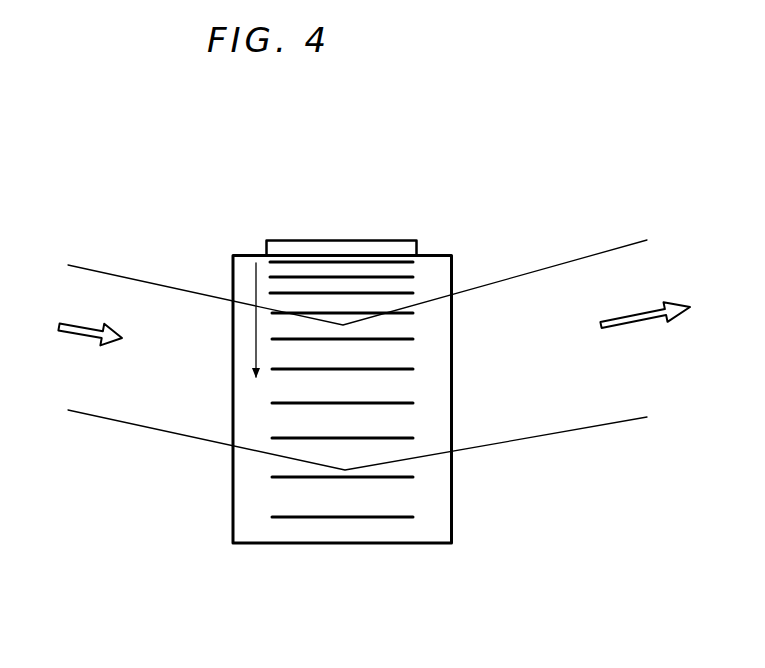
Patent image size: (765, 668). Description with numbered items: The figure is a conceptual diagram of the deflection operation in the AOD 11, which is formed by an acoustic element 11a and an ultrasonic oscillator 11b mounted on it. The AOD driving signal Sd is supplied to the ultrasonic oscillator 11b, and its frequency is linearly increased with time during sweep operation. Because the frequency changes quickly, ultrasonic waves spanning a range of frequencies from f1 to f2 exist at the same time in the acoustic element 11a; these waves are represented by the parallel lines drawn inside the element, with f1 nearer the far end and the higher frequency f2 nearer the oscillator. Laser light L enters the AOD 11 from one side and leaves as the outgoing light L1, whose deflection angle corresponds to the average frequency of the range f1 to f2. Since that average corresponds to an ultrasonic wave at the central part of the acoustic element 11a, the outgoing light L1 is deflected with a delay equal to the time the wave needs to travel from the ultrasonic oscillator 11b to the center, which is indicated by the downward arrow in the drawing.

The AOD 11 is at (237, 242).
The acoustic element 11a is at (453, 263).
The ultrasonic oscillator 11b is at (418, 243).
The AOD driving signal Sd is at (338, 240).
The lower frequency of the ultrasonic frequency range f1 is at (430, 469).
The upper frequency of the ultrasonic frequency range f2 is at (425, 323).
The laser light L is at (103, 339).
The outgoing light L1 is at (623, 326).